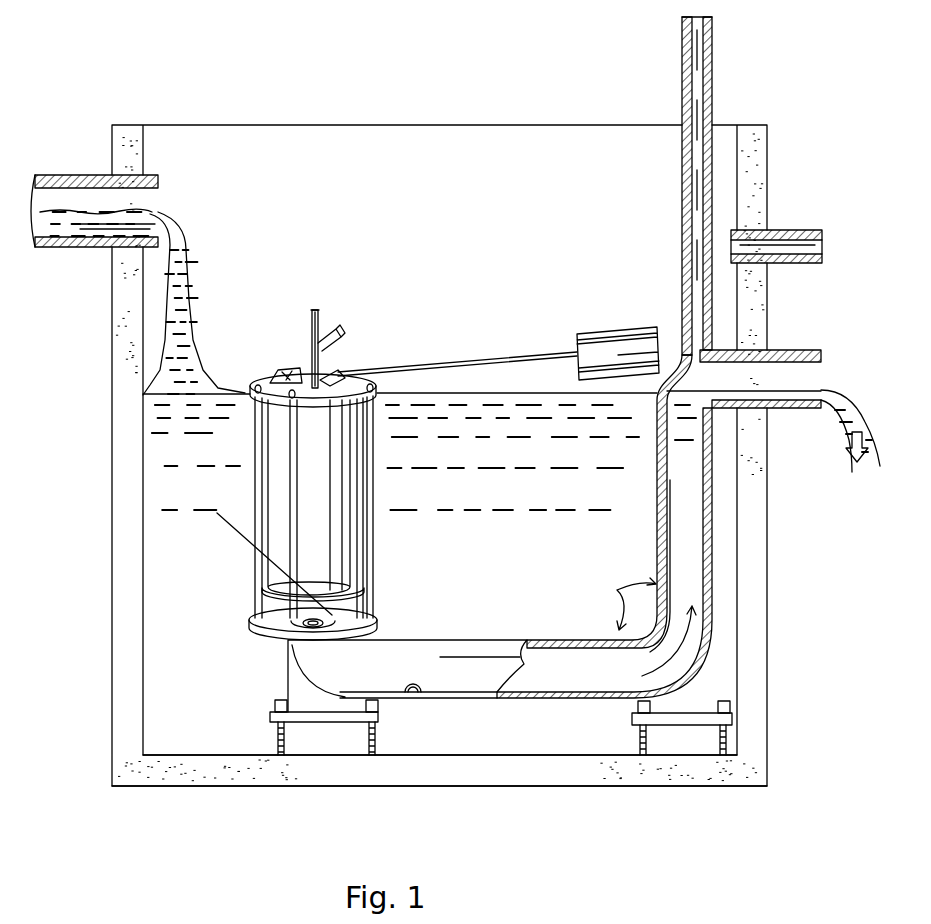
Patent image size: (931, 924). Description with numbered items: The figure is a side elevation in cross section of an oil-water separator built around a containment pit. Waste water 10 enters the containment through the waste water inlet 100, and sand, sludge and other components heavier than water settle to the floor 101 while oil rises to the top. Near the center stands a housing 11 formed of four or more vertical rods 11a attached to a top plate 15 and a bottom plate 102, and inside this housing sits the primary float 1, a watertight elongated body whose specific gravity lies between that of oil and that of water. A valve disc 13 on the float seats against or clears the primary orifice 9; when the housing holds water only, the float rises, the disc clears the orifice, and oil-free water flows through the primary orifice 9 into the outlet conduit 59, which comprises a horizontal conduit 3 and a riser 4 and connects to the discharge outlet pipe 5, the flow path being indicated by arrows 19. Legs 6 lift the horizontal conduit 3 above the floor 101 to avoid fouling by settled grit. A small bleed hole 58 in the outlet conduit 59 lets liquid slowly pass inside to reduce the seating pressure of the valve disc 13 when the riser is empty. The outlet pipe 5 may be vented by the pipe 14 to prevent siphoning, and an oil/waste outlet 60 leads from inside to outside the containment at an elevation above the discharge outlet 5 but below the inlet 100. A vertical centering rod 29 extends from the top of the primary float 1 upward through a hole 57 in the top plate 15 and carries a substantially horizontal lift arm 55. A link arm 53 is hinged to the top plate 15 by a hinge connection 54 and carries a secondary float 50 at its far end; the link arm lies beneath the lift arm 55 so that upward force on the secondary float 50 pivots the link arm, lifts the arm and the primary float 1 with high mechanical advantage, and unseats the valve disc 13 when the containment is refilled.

The waste water inlet 100 is at (100, 175).
The waste water 10 is at (160, 214).
The vent pipe 14 is at (700, 64).
The oil/waste outlet 60 is at (783, 230).
The vertical centering rod 29 is at (312, 312).
The lift arm 55 is at (340, 334).
The hinge connection 54 is at (285, 370).
The link arm 53 is at (473, 356).
The secondary float 50 is at (600, 340).
The hole 57 is at (346, 383).
The top plate 15 is at (265, 392).
The housing 11 is at (382, 500).
The vertical rods 11a is at (368, 531).
The primary float 1 is at (318, 563).
The valve disc 13 is at (364, 591).
The arrows 19 is at (248, 540).
The bottom plate 102 is at (268, 625).
The primary orifice 9 is at (345, 624).
The outlet conduit 59 is at (618, 603).
The riser 4 is at (695, 592).
The discharge outlet pipe 5 is at (795, 402).
The horizontal conduit 3 is at (487, 692).
The bleed hole 58 is at (415, 698).
The legs 6 is at (373, 742).
The floor 101 is at (255, 755).